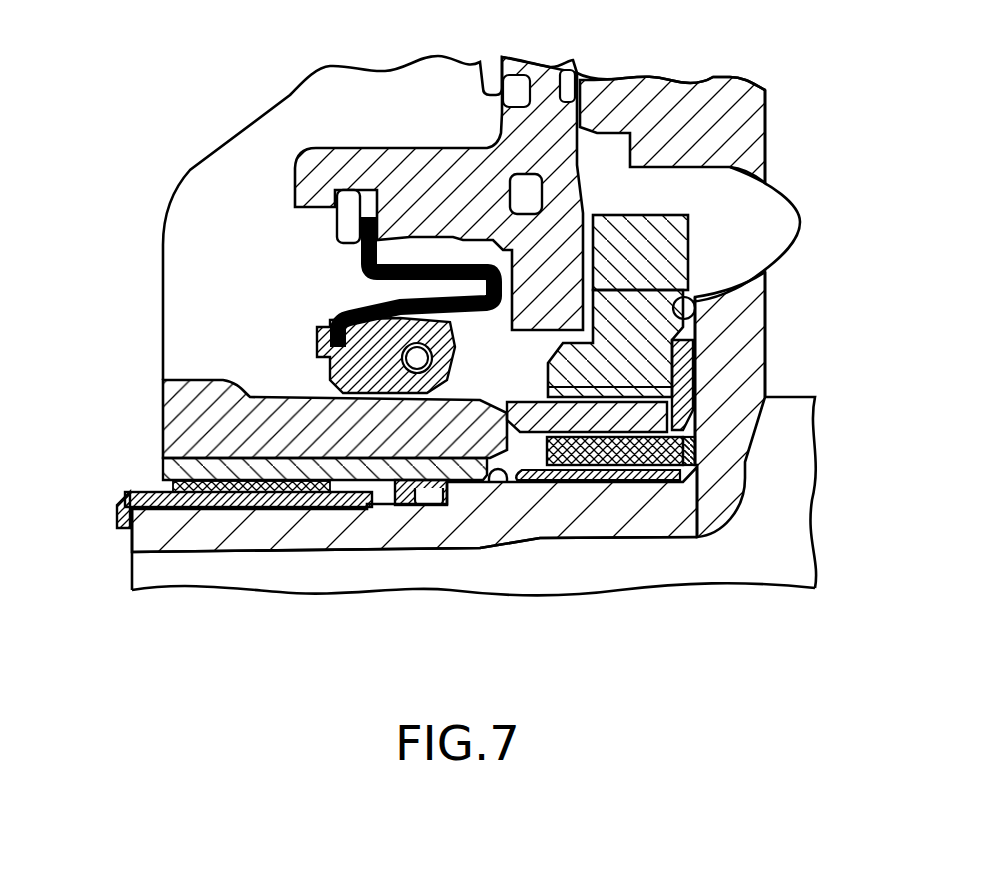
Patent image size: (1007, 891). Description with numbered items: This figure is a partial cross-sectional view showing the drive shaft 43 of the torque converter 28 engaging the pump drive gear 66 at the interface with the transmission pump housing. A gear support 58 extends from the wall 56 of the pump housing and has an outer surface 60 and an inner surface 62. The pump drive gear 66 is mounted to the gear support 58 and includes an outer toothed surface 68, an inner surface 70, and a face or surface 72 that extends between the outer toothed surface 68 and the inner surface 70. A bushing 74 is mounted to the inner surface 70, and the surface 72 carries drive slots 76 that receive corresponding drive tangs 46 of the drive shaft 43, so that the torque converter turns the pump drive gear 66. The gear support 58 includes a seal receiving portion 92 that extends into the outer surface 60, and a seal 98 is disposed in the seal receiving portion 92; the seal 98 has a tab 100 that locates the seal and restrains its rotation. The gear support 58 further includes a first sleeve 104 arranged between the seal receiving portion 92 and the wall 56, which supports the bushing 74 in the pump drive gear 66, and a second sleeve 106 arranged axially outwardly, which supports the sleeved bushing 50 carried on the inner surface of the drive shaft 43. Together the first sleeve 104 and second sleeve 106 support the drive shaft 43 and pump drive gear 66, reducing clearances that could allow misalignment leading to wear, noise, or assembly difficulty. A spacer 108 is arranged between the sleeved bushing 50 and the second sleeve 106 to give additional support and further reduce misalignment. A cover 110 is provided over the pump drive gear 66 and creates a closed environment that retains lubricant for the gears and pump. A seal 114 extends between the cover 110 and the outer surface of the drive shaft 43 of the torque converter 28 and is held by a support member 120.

The torque converter 28 is at (182, 324).
The cover 110 is at (387, 178).
The outer toothed surface 68 is at (660, 253).
The pump drive gear 66 is at (698, 420).
The wall 56 is at (677, 307).
The face or surface 72 is at (548, 370).
The drive slots 76 is at (665, 387).
The first sleeve 104 is at (603, 474).
The bushing 74 is at (623, 450).
The inner surface 70 is at (678, 457).
The drive shaft 43 is at (303, 424).
The spacer 108 is at (186, 478).
The tab 100 is at (415, 498).
The second sleeve 106 is at (133, 500).
The seal 98 is at (432, 500).
The seal receiving portion 92 is at (432, 498).
The outer surface 60 is at (489, 484).
The sleeved bushing 50 is at (228, 472).
The drive tangs 46 is at (568, 417).
The inner surface 62 is at (248, 597).
The gear support 58 is at (175, 588).
The seal 114 is at (324, 350).
The support member 120 is at (373, 307).